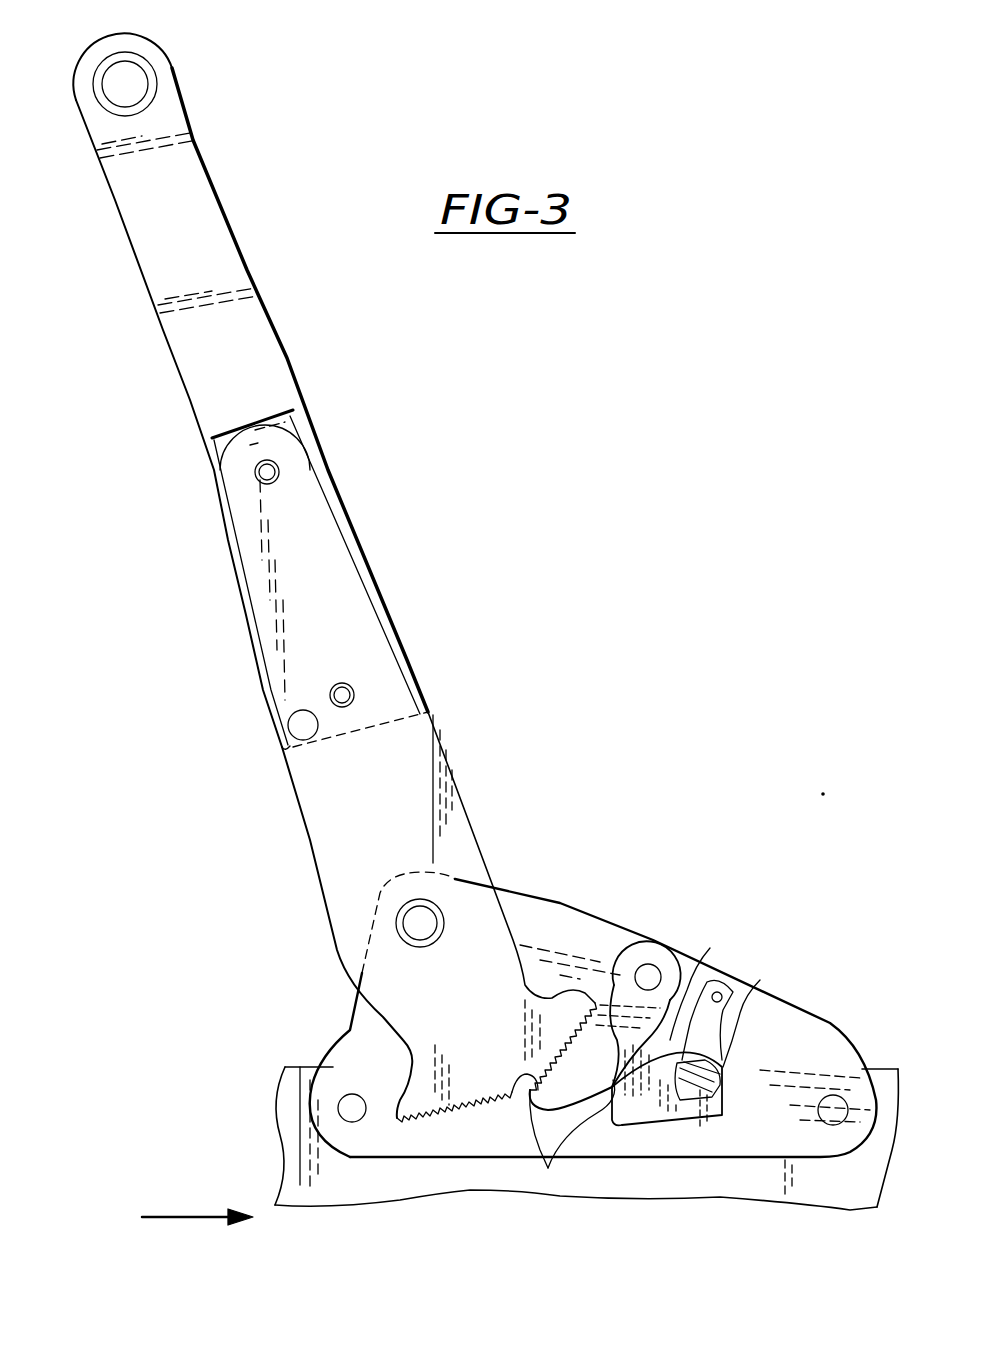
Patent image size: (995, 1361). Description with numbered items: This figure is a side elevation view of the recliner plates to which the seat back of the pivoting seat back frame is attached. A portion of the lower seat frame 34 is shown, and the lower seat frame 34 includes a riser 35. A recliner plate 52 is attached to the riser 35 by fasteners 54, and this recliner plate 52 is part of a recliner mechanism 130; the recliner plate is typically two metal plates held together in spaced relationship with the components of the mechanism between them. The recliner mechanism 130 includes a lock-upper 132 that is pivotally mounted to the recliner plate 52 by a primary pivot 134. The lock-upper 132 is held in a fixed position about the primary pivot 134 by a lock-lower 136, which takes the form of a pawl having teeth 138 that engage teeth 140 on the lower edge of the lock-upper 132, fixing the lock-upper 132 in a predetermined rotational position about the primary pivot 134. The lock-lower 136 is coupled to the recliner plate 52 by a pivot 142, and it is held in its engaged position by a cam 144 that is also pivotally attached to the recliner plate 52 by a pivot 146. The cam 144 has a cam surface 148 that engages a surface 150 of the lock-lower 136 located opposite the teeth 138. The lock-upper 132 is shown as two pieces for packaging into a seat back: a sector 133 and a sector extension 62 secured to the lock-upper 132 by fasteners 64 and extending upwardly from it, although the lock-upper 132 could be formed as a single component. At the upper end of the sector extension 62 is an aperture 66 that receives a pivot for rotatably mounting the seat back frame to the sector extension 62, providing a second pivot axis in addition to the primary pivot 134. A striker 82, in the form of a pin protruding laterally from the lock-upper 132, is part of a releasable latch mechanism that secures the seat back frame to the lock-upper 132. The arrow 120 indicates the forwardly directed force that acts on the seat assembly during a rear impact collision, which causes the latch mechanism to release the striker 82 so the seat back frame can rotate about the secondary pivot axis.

The lower seat frame 34 is at (274, 1182).
The riser 35 is at (300, 1066).
The recliner plate 52 is at (595, 916).
The fasteners 54 is at (830, 1094).
The sector extension 62 is at (279, 348).
The fasteners 64 is at (279, 470).
The aperture 66 is at (118, 68).
The striker 82 is at (288, 722).
The arrow 120 is at (158, 1217).
The recliner mechanism 130 is at (565, 883).
The lock-upper 132 is at (455, 789).
The sector 133 is at (306, 850).
The primary pivot 134 is at (445, 902).
The lock-lower 136 is at (618, 962).
The teeth 138 is at (535, 1100).
The teeth 140 is at (440, 1120).
The pivot 142 is at (657, 962).
The cam 144 is at (617, 1122).
The pivot 146 is at (760, 980).
The cam surface 148 is at (597, 1113).
The surface 150 is at (710, 948).